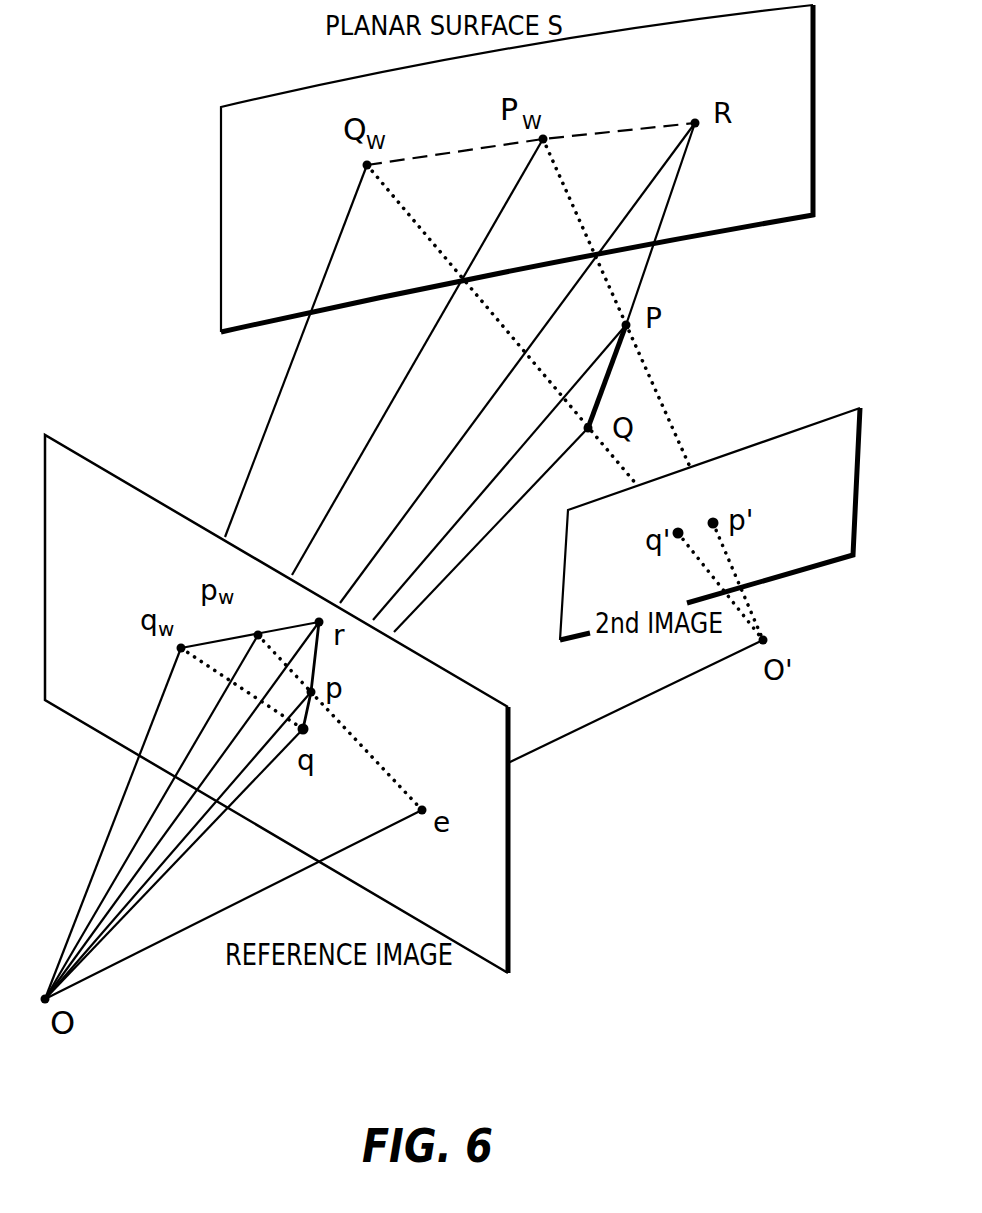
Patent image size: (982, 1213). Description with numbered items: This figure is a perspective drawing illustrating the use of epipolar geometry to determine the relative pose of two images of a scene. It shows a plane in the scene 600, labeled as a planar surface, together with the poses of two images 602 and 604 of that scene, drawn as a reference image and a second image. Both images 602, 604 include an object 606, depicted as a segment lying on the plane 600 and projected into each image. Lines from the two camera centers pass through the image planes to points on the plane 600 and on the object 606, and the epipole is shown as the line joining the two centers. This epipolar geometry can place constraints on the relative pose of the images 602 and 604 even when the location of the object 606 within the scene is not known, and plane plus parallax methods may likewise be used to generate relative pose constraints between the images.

The plane in the scene 600 is at (242, 172).
The image 602 is at (485, 870).
The image 604 is at (832, 547).
The object 606 is at (608, 380).